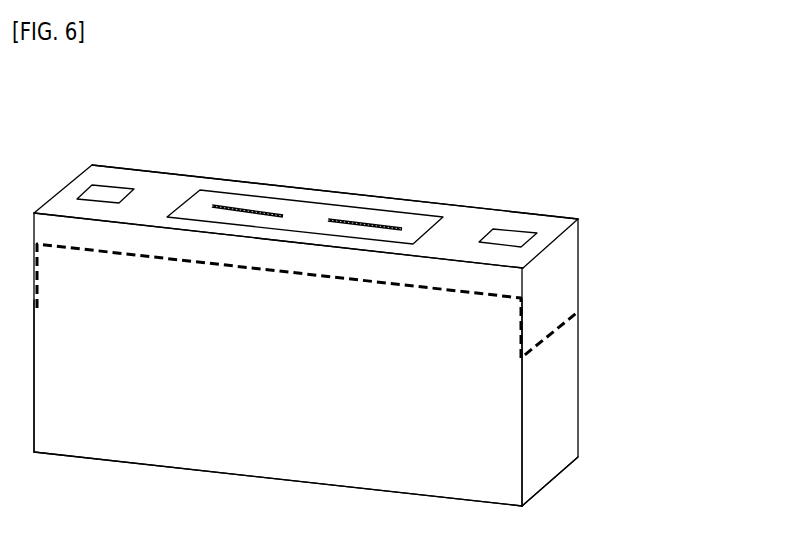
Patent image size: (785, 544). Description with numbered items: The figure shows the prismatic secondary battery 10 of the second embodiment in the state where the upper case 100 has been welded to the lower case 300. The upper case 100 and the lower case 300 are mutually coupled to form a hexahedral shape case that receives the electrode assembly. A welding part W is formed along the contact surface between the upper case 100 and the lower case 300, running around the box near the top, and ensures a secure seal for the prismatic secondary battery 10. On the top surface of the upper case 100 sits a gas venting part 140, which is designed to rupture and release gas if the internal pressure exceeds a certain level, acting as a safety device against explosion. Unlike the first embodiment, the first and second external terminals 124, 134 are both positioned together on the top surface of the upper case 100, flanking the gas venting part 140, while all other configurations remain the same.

The prismatic secondary battery 10 is at (368, 295).
The upper case 100 is at (584, 273).
The first external terminal 124 is at (107, 190).
The second external terminal 134 is at (512, 238).
The gas venting part 140 is at (304, 215).
The lower case 300 is at (592, 422).
The welding part W is at (550, 338).